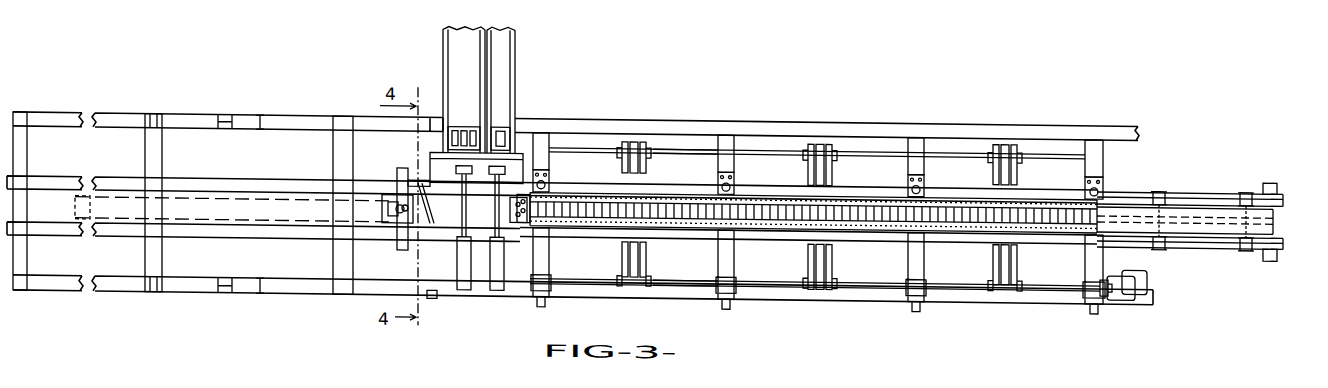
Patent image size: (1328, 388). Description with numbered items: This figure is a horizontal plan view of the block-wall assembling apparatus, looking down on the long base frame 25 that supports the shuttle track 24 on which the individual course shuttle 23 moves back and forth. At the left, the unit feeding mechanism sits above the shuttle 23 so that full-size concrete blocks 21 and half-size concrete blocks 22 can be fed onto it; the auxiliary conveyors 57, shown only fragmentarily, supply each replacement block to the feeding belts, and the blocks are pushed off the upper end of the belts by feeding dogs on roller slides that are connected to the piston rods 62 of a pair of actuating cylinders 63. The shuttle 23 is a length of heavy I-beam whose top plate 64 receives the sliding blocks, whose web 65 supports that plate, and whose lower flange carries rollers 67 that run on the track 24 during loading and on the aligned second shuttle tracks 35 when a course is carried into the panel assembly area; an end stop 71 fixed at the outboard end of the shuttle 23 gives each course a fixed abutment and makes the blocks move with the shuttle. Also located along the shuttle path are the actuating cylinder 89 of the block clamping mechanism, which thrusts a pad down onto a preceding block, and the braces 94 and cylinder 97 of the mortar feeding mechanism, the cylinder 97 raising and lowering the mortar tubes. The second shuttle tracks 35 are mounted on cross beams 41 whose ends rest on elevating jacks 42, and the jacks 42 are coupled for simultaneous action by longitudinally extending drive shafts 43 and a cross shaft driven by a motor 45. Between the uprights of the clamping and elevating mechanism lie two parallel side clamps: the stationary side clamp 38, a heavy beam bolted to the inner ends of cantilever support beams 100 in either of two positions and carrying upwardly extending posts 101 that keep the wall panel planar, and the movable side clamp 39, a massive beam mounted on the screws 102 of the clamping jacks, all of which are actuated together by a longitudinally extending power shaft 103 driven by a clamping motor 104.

The full-size concrete blocks 21 is at (472, 124).
The half-size concrete blocks 22 is at (510, 124).
The individual course shuttle 23 is at (198, 222).
The track 24 is at (263, 205).
The base frame 25 is at (341, 103).
The shuttle tracks 35 is at (1143, 170).
The side clamp 38 is at (886, 190).
The side clamp 39 is at (868, 219).
The cross beams 41 is at (645, 172).
The elevating jacks 42 is at (628, 155).
The drive shafts 43 is at (680, 156).
The motor 45 is at (1138, 288).
The auxiliary conveyors 57 is at (438, 51).
The piston rods 62 is at (496, 199).
The actuating cylinders 63 is at (490, 259).
The top plate 64 is at (1275, 212).
The web 65 is at (1213, 215).
The rollers 67 is at (1243, 177).
The end stop 71 is at (510, 204).
The actuating cylinder 89 is at (382, 207).
The braces 94 is at (410, 161).
The cylinder 97 is at (403, 206).
The cantilever support beams 100 is at (549, 145).
The posts 101 is at (549, 173).
The screws 102 is at (718, 245).
The power shaft 103 is at (853, 278).
The clamping motor 104 is at (1103, 290).